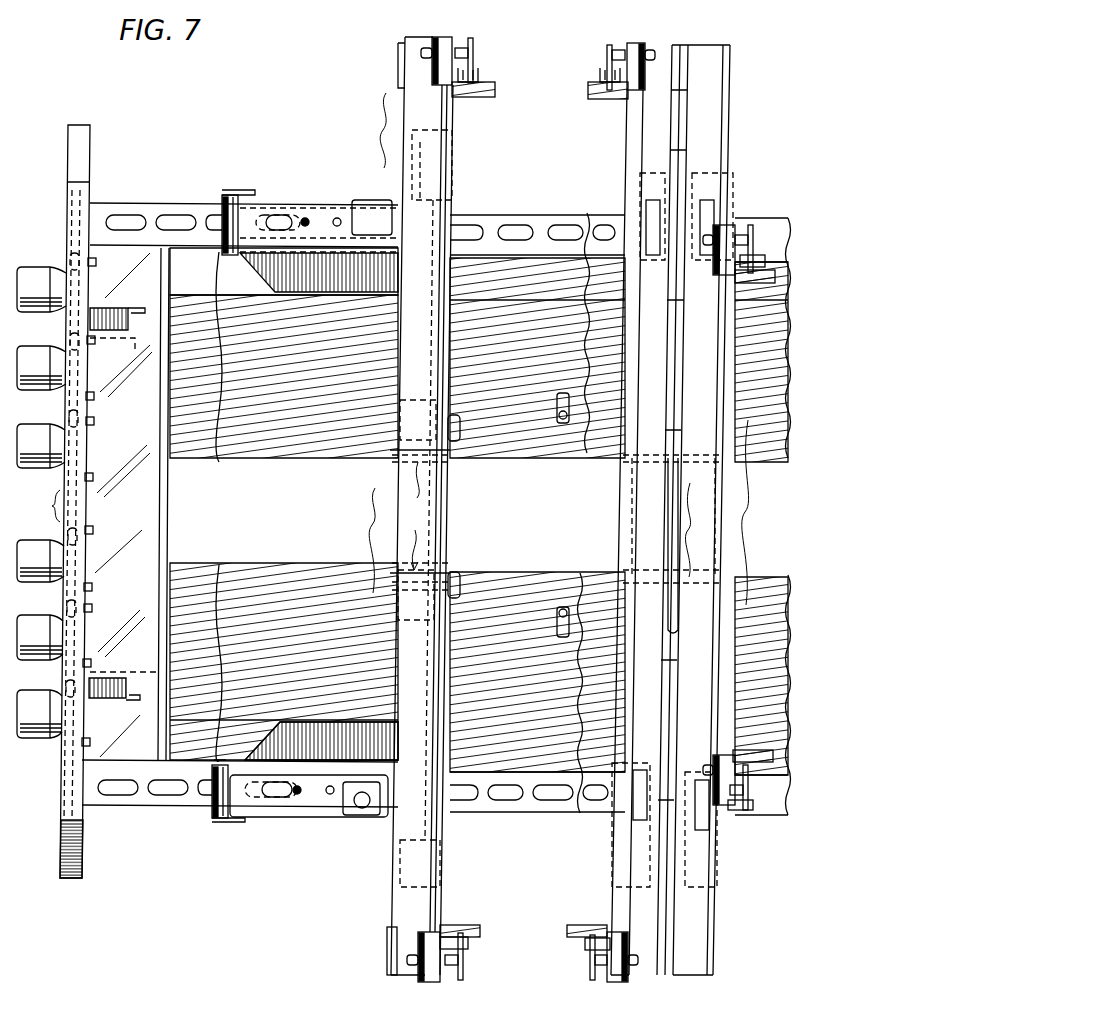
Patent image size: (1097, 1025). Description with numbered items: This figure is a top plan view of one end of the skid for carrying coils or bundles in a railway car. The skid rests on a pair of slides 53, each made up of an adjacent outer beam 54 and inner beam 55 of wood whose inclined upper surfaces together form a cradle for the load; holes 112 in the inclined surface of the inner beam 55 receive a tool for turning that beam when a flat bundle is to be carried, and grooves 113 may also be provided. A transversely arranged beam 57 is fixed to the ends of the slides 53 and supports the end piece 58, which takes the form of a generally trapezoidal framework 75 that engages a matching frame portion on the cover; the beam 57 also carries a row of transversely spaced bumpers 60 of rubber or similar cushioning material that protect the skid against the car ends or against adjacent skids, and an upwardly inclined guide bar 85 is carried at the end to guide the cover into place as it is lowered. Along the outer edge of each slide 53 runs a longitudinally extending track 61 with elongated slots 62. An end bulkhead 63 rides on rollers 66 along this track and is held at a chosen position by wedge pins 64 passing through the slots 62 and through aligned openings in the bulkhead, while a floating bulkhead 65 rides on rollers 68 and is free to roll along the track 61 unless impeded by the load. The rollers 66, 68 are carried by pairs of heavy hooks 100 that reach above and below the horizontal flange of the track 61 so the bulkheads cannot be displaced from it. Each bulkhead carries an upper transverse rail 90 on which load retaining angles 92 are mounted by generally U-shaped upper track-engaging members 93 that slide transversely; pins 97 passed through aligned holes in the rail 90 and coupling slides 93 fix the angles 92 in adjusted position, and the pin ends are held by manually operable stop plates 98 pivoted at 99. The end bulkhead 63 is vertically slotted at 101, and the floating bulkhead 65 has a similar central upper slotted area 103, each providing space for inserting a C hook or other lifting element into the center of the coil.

The slide 53 is at (226, 322).
The outer beam 54 is at (165, 332).
The inner beam 55 is at (178, 408).
The transversely arranged beam 57 is at (166, 508).
The end piece 58 is at (41, 506).
The bumper 60 is at (42, 385).
The track 61 is at (135, 205).
The elongated slot 62 is at (172, 218).
The end bulkhead 63 is at (387, 508).
The wedge pin 64 is at (365, 203).
The floating bulkhead 65 is at (764, 512).
The roller 66 is at (233, 195).
The roller 68 is at (645, 215).
The trapezoidal framework 75 is at (88, 508).
The guide bar 85 is at (117, 308).
The upper transverse rail 90 is at (412, 73).
The load retaining angle 92 is at (488, 98).
The upper track-engaging member 93 is at (440, 40).
The pin 97 is at (474, 40).
The plate 98 is at (476, 52).
The pivot 99 is at (482, 76).
The hook 100 is at (430, 172).
The slotted portion 101 is at (420, 520).
The central upper slotted area 103 is at (676, 514).
The hole 112 is at (562, 430).
The groove 113 is at (456, 445).